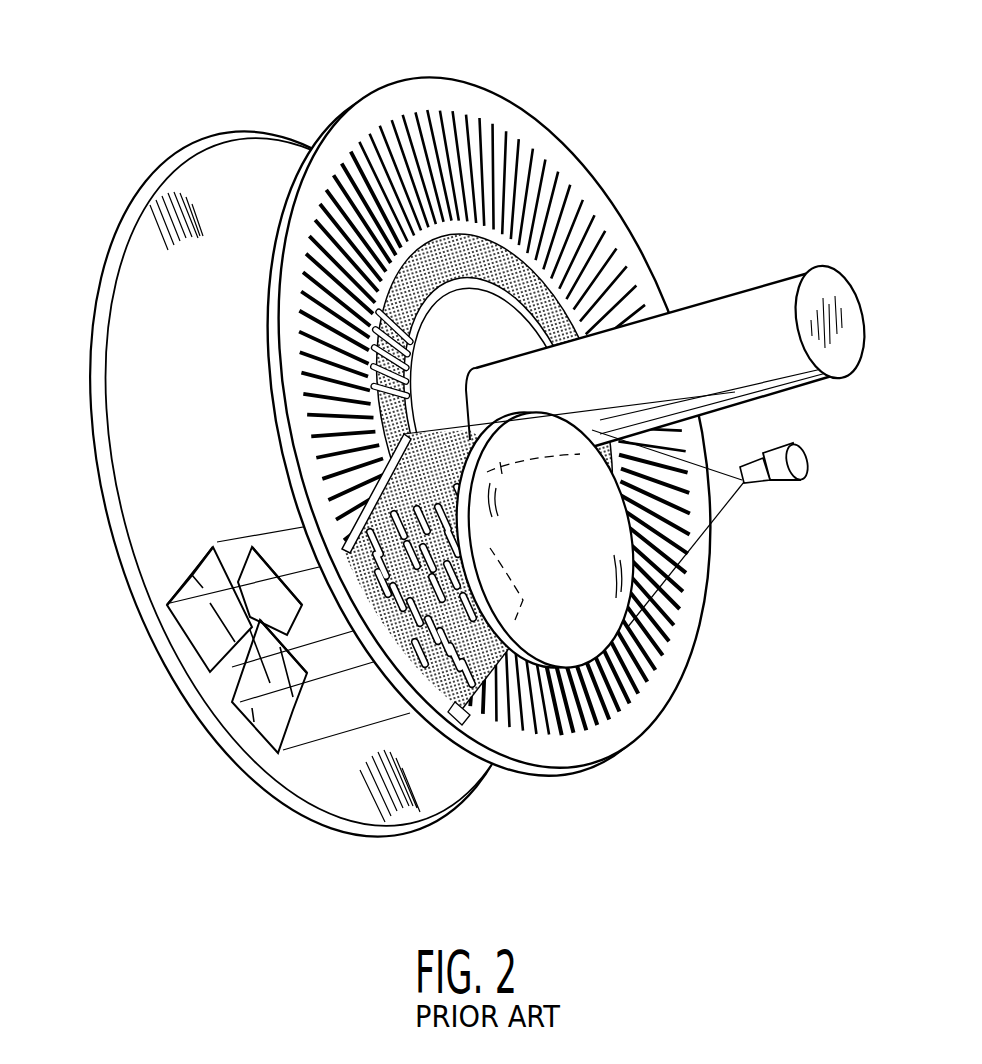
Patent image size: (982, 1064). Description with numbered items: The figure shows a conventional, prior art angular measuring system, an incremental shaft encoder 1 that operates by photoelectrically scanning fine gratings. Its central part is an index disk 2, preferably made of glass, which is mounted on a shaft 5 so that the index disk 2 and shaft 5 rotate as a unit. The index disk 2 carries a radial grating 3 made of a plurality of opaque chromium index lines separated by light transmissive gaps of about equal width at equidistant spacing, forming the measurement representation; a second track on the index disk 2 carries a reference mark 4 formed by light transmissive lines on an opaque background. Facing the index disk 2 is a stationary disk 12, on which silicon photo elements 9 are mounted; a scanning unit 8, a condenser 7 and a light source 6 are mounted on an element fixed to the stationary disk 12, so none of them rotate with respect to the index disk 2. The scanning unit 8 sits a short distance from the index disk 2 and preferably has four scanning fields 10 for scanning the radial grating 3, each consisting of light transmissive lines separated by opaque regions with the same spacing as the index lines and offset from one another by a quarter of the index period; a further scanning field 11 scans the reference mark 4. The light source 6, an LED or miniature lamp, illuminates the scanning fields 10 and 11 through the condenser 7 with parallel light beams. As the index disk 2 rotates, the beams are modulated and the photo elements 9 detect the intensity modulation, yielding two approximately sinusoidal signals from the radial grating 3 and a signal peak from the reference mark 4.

The incremental shaft encoder 1 is at (92, 492).
The index disk 2 is at (575, 165).
The radial grating 3 is at (605, 245).
The reference mark 4 is at (405, 378).
The shaft 5 is at (742, 313).
The light source 6 is at (780, 478).
The condenser 7 is at (567, 480).
The scanning unit 8 is at (445, 742).
The photo elements 9 is at (185, 605).
The scanning fields 10 is at (345, 530).
The scanning field 11 is at (466, 537).
The stationary disk 12 is at (205, 176).